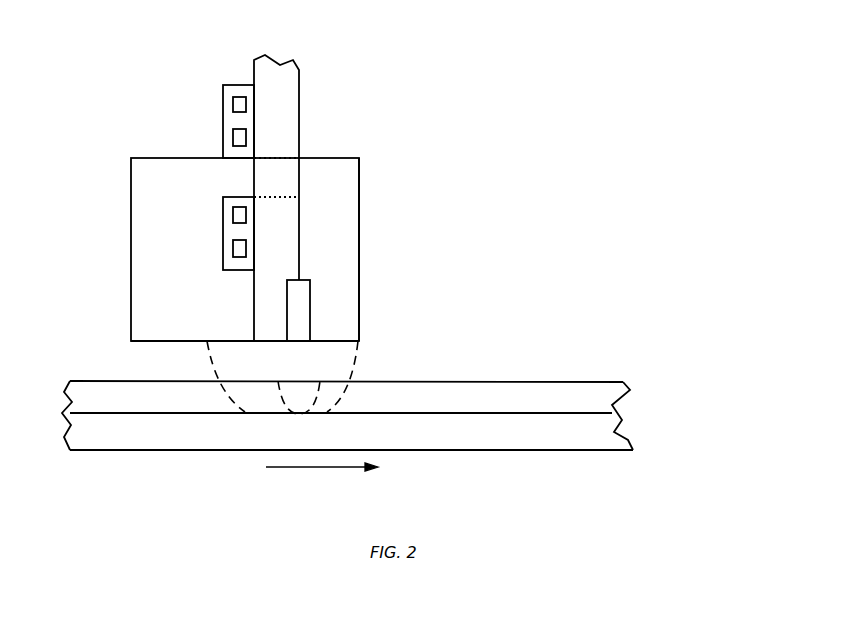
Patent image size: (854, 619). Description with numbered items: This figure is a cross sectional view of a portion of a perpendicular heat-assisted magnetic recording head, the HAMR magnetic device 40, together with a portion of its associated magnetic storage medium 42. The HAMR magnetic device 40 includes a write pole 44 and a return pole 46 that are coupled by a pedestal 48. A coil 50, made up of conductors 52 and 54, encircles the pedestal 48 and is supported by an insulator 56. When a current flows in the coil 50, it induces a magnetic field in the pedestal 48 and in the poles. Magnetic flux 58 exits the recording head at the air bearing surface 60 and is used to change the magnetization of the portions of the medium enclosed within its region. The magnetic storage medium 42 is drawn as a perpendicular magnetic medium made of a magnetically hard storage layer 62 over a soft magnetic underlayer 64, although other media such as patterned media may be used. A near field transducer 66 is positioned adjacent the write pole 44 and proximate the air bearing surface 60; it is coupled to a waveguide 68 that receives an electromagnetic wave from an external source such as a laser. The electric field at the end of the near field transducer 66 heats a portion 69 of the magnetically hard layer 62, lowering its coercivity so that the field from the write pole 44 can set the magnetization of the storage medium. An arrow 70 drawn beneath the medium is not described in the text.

The HAMR magnetic device 40 is at (450, 87).
The magnetic storage medium 42 is at (628, 355).
The write pole 44 is at (337, 200).
The return pole 46 is at (155, 280).
The pedestal 48 is at (280, 178).
The coil 50 is at (213, 74).
The conductors 52 is at (233, 247).
The conductors 54 is at (233, 137).
The insulator 56 is at (228, 91).
The magnetic flux 58 is at (352, 367).
The air bearing surface 60 is at (148, 341).
The magnetically hard storage layer 62 is at (585, 403).
The soft magnetic underlayer 64 is at (580, 427).
The near field transducer 66 is at (302, 304).
The waveguide 68 is at (273, 122).
The heated portion 69 is at (283, 403).
The direction of travel 70 is at (318, 468).